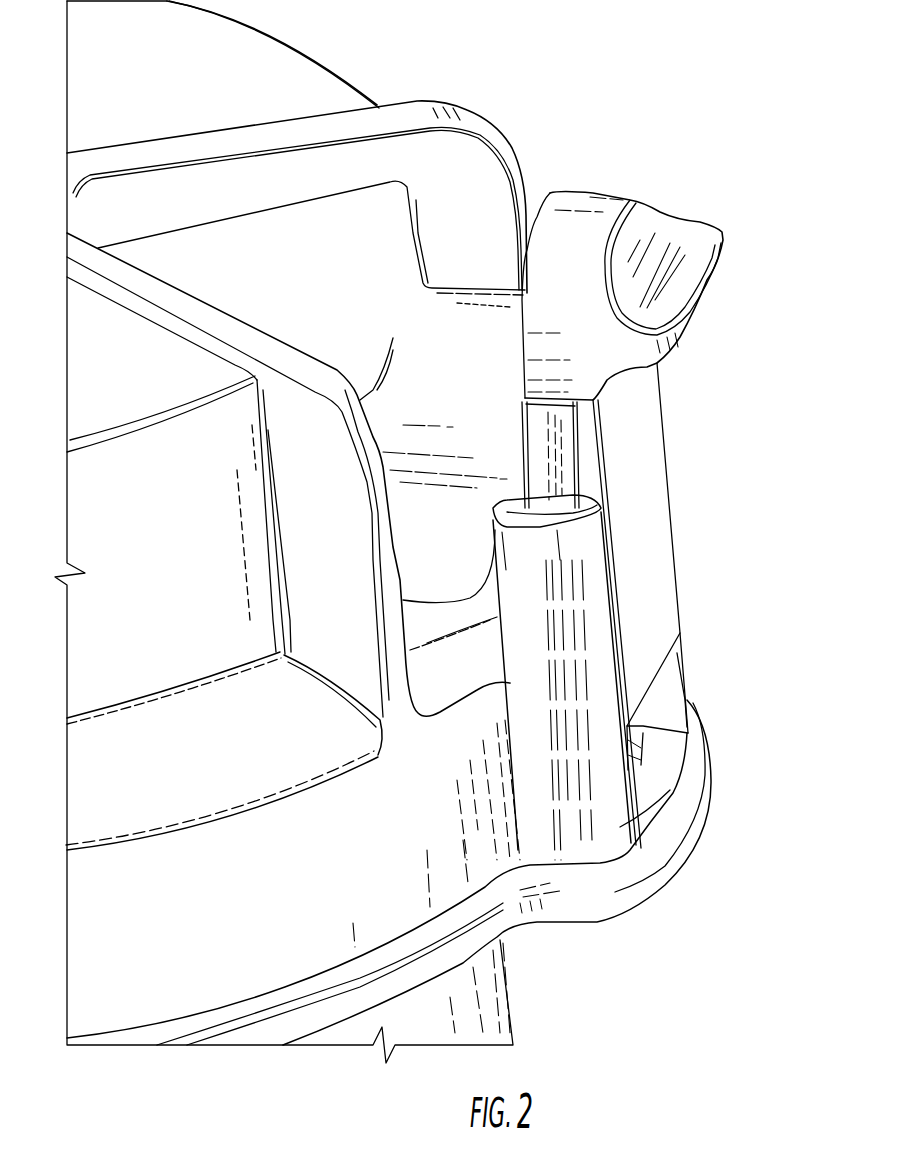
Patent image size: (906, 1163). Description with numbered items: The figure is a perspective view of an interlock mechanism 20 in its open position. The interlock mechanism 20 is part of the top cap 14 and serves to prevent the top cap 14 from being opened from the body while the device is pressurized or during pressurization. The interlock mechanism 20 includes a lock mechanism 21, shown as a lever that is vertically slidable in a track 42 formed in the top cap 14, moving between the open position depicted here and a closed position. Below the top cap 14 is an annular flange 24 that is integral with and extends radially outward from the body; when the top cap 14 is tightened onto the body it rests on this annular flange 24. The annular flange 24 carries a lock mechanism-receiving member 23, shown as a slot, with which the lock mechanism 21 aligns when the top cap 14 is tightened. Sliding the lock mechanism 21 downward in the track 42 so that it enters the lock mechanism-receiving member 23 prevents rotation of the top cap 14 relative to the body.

The top cap 14 is at (313, 90).
The interlock mechanism 20 is at (718, 456).
The lock mechanism 21 is at (667, 223).
The lock mechanism-receiving member 23 is at (633, 773).
The annular flange 24 is at (502, 932).
The track 42 is at (617, 827).